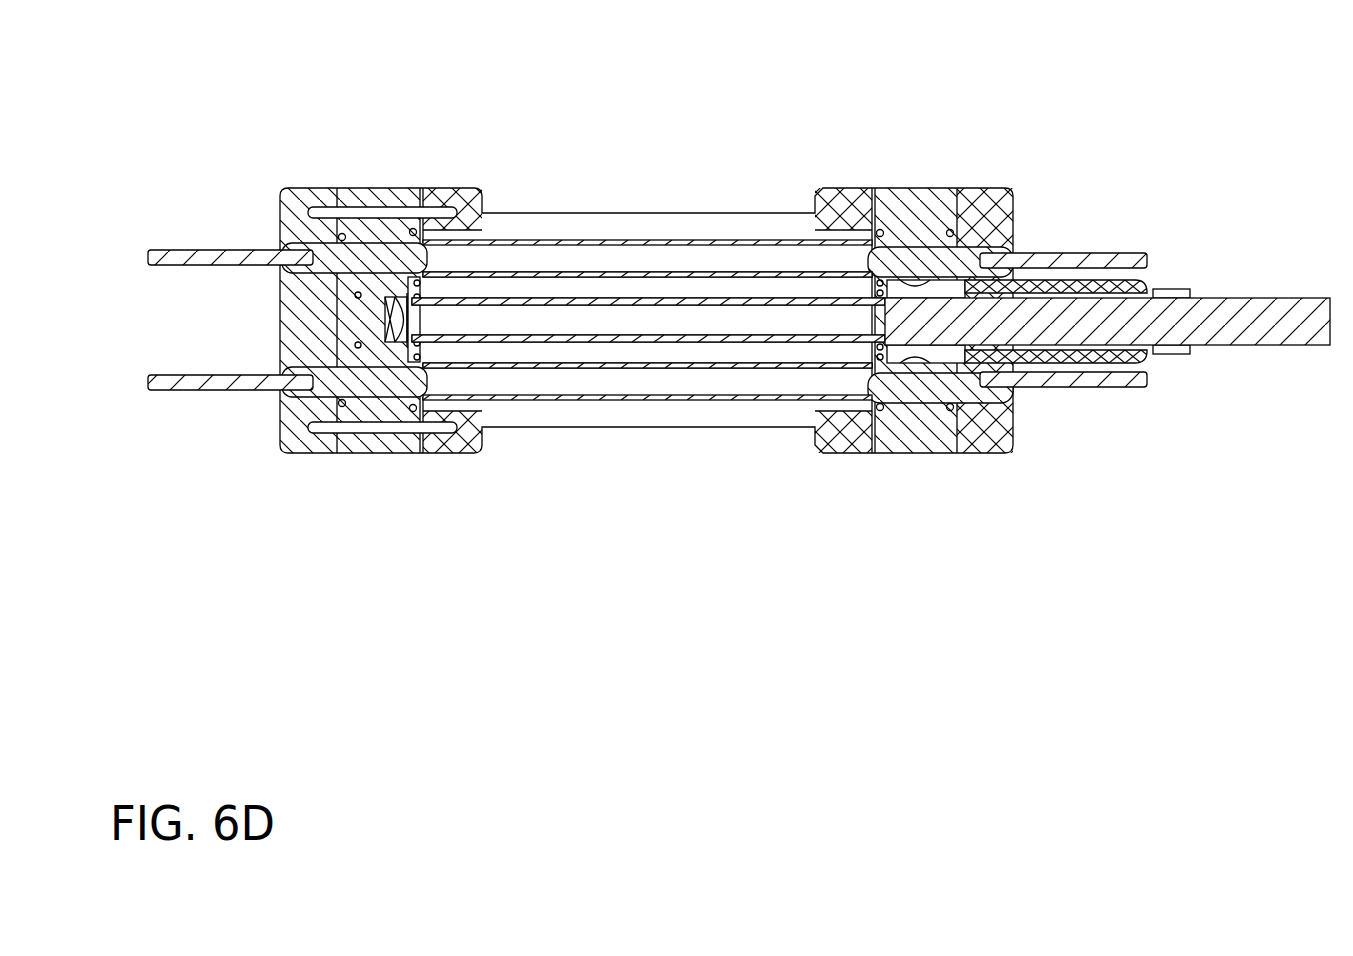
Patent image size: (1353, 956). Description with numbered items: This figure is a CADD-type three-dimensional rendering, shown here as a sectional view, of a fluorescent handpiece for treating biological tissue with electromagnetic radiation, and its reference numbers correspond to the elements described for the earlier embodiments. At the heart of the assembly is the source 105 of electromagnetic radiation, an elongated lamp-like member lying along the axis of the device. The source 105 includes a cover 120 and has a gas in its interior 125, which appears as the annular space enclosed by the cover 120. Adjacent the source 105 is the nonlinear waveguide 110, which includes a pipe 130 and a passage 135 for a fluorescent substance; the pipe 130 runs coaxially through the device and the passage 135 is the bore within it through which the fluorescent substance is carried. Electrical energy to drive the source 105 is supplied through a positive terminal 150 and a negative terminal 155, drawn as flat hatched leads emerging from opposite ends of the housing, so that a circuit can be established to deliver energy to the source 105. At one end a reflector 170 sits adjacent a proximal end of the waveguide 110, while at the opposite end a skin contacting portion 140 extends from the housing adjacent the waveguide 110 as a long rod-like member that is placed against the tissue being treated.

The source of electromagnetic radiation 105 is at (715, 232).
The nonlinear waveguide 110 is at (578, 352).
The cover 120 is at (632, 245).
The interior 125 is at (545, 262).
The pipe 130 is at (545, 333).
The passage 135 is at (510, 318).
The skin contacting portion 140 is at (1290, 315).
The positive terminal 150 is at (231, 255).
The negative terminal 155 is at (1068, 262).
The reflector 170 is at (390, 313).